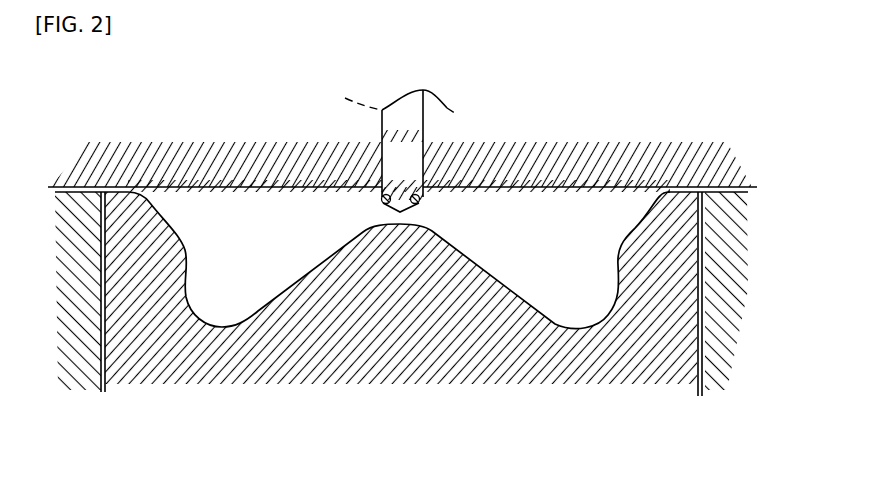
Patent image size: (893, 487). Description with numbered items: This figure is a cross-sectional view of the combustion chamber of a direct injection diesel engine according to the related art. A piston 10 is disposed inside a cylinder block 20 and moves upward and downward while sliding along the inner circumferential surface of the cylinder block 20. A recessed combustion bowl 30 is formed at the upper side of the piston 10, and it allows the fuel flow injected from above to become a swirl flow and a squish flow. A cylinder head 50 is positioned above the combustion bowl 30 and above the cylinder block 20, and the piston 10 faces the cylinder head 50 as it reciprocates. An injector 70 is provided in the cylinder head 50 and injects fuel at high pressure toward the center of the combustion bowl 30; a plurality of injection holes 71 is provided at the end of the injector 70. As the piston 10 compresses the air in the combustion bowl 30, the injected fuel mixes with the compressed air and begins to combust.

The piston 10 is at (497, 337).
The cylinder block 20 is at (722, 238).
The combustion bowl 30 is at (563, 290).
The cylinder head 50 is at (565, 148).
The injector 70 is at (388, 124).
The injection holes 71 is at (420, 207).